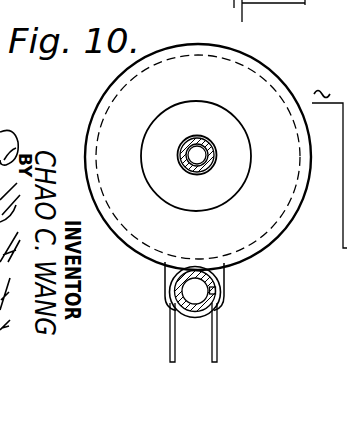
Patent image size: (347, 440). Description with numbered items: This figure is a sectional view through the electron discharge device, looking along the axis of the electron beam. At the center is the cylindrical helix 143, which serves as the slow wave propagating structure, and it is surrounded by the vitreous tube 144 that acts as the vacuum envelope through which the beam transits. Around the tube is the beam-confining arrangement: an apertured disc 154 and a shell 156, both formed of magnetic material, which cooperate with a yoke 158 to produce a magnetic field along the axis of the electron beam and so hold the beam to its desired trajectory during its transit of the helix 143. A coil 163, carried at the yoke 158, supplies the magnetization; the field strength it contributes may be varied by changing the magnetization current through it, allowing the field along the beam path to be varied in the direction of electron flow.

The apertured disc 154 is at (118, 125).
The shell 156 is at (267, 77).
The vitreous tube 144 is at (199, 143).
The cylindrical helix 143 is at (179, 160).
The yoke 158 is at (182, 288).
The coil 163 is at (216, 289).